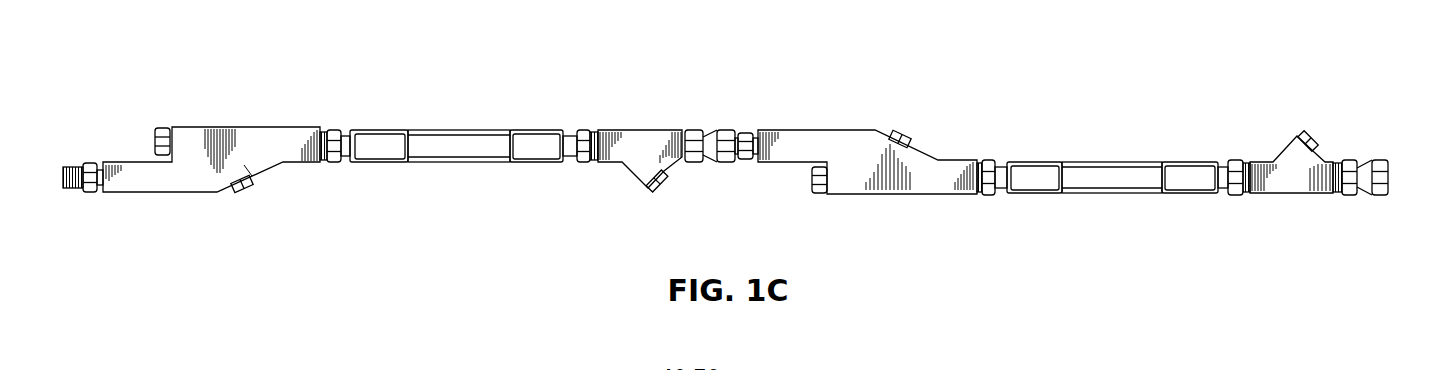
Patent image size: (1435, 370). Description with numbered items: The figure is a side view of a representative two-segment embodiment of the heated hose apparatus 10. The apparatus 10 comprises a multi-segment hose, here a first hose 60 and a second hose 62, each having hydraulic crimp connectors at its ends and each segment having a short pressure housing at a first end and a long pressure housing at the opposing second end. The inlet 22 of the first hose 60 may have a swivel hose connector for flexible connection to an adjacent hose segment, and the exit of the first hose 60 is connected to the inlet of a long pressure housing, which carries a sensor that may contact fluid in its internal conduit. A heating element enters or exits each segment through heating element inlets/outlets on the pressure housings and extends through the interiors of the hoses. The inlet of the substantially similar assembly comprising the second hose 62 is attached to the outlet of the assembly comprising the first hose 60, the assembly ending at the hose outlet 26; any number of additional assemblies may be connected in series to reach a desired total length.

The apparatus 10 is at (747, 58).
The hose inlet 22 is at (1390, 177).
The hose outlet 26 is at (79, 192).
The first hose 60 is at (1118, 196).
The second hose 62 is at (463, 163).